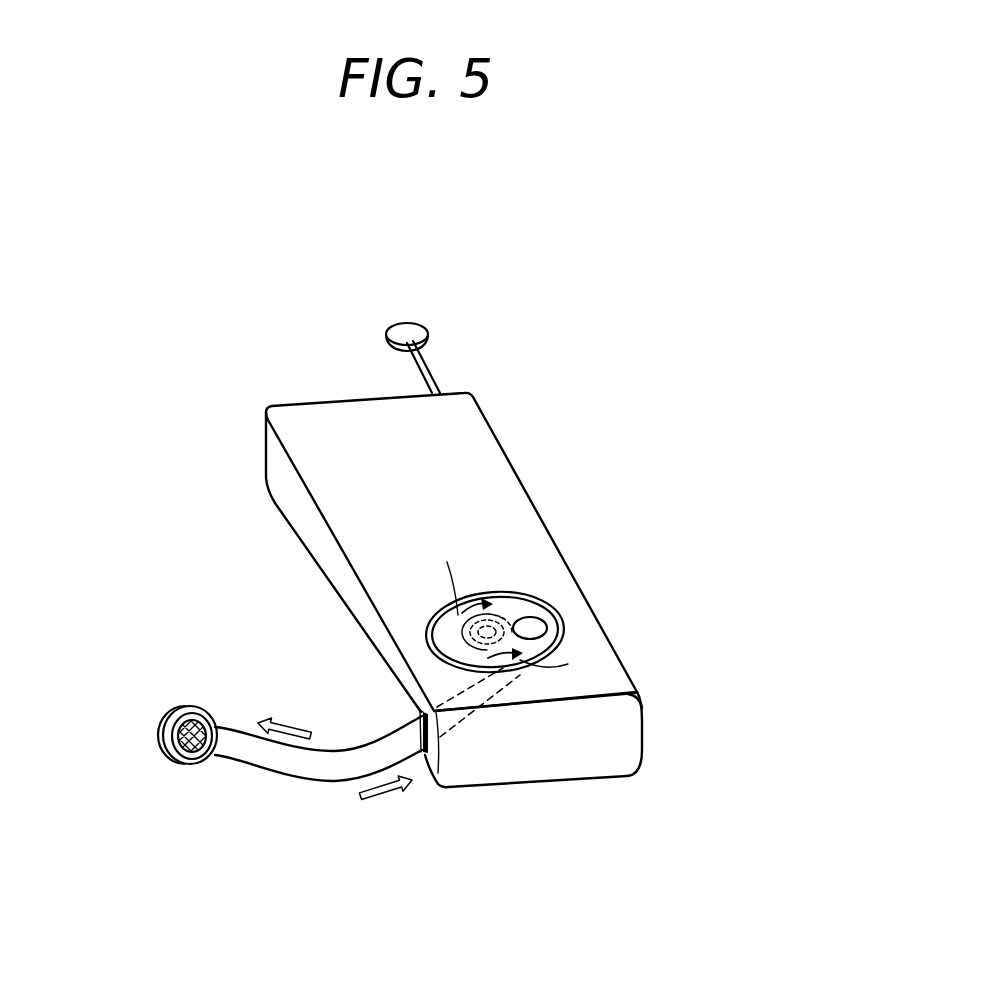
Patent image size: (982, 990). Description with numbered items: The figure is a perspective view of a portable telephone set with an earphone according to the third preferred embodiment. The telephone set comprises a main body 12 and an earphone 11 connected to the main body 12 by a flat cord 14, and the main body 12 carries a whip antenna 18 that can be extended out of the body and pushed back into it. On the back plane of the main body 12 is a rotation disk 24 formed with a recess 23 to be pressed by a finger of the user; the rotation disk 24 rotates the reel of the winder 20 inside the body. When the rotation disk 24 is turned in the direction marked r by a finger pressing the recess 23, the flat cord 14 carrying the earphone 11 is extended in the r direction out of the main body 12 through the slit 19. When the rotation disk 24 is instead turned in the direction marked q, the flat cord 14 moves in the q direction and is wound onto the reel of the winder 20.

The earphone 11 is at (168, 757).
The main body 12 is at (527, 468).
The flat cord 14 is at (283, 763).
The whip antenna 18 is at (429, 368).
The slit 19 is at (428, 738).
The winder 20 is at (525, 677).
The recess 23 is at (543, 617).
The rotation disk 24 is at (512, 598).